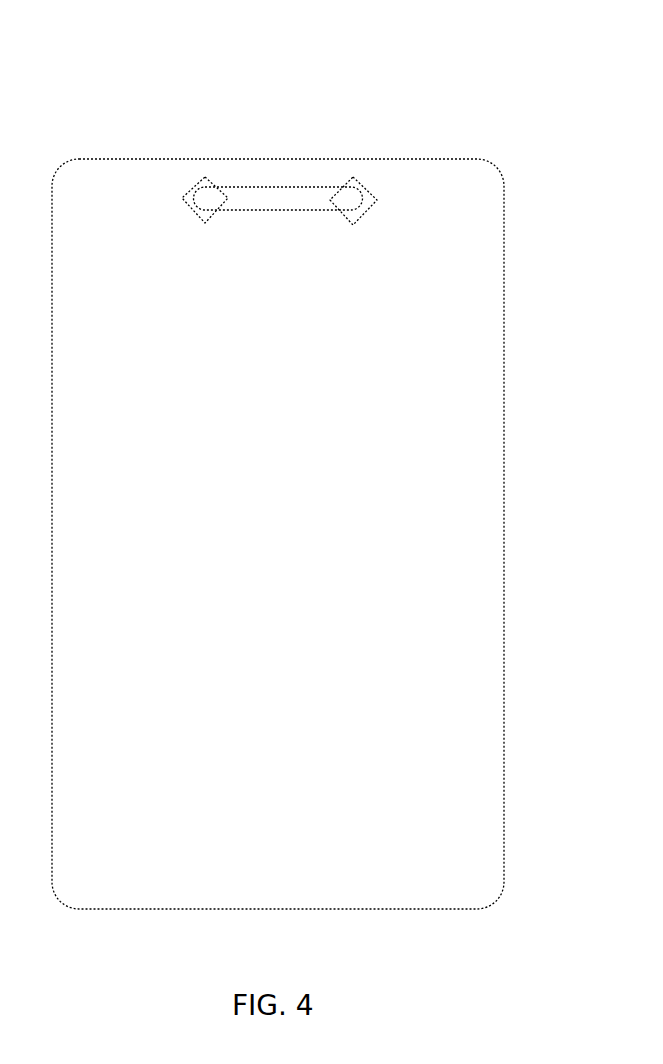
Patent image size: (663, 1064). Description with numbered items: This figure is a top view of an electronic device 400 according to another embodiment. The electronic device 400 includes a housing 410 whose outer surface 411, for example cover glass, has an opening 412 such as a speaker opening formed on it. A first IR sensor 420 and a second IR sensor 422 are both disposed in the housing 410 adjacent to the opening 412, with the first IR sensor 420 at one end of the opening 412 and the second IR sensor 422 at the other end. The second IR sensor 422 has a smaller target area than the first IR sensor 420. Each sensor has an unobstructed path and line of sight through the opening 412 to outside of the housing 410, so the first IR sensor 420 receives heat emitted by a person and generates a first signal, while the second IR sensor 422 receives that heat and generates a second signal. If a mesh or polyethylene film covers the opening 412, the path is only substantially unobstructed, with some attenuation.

The electronic device 400 is at (98, 56).
The housing 410 is at (296, 158).
The outer surface 411 is at (298, 517).
The opening 412 is at (273, 196).
The first IR sensor 420 is at (205, 176).
The second IR sensor 422 is at (370, 193).